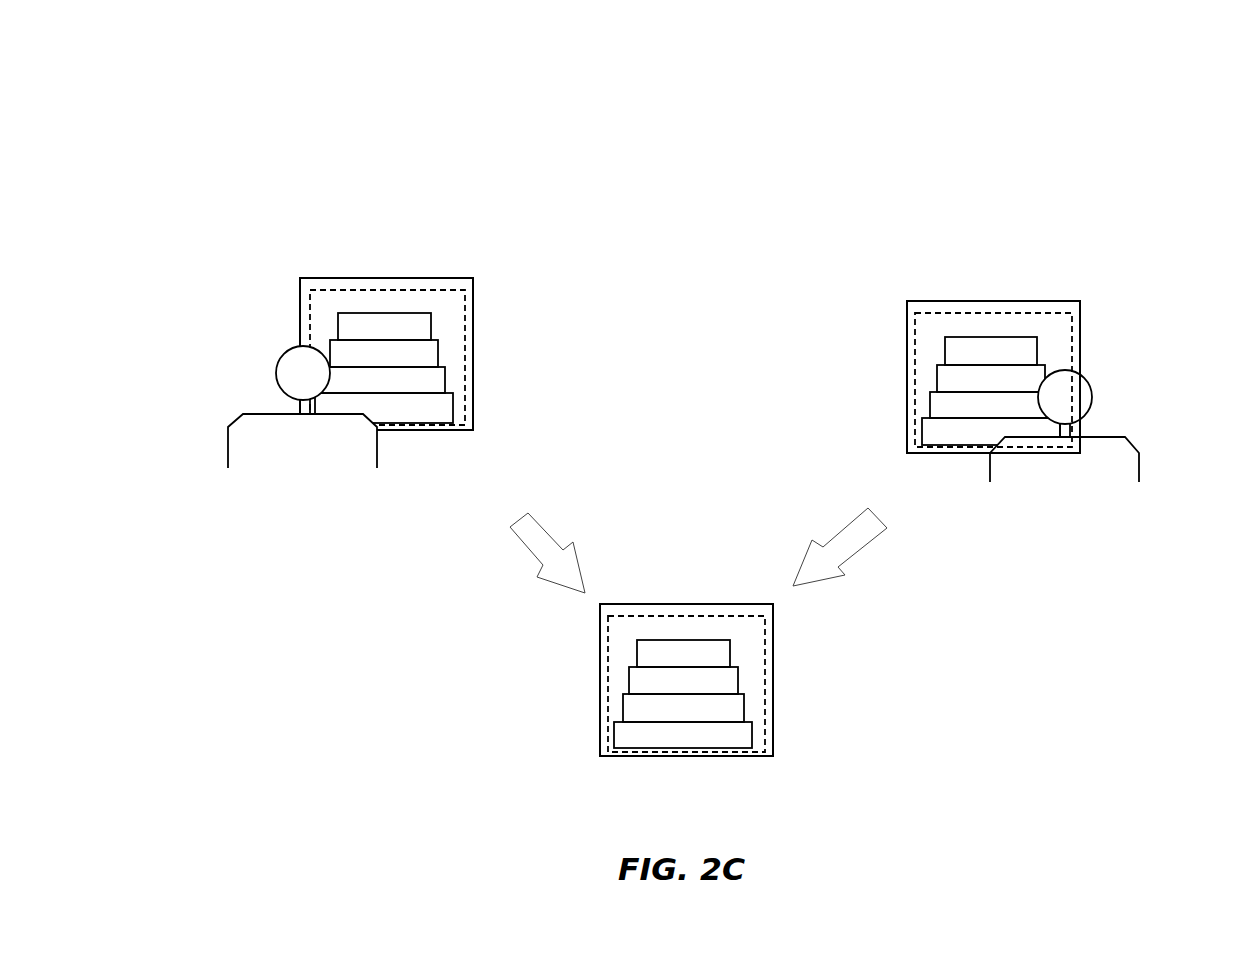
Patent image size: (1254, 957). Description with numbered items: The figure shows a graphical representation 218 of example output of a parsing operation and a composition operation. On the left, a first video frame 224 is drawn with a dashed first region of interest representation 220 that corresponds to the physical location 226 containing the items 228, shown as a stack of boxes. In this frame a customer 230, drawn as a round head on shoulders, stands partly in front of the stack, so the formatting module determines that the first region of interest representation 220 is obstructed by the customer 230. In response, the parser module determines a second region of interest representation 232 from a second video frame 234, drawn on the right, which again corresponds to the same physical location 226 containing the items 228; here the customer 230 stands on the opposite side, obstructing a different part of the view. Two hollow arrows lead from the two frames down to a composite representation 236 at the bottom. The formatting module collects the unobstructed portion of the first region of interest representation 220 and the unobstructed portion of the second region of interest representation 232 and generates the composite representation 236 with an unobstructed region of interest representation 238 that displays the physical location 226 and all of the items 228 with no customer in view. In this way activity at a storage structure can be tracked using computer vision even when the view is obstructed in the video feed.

The graphical representation 218 is at (132, 107).
The first region of interest representation 220 is at (398, 290).
The first video frame 224 is at (322, 275).
The physical location 226 is at (907, 355).
The items 228 is at (1118, 313).
The customer 230 is at (1143, 387).
The second region of interest representation 232 is at (1003, 313).
The second video frame 234 is at (907, 303).
The composite representation 236 is at (690, 590).
The unobstructed region of interest representation 238 is at (608, 692).